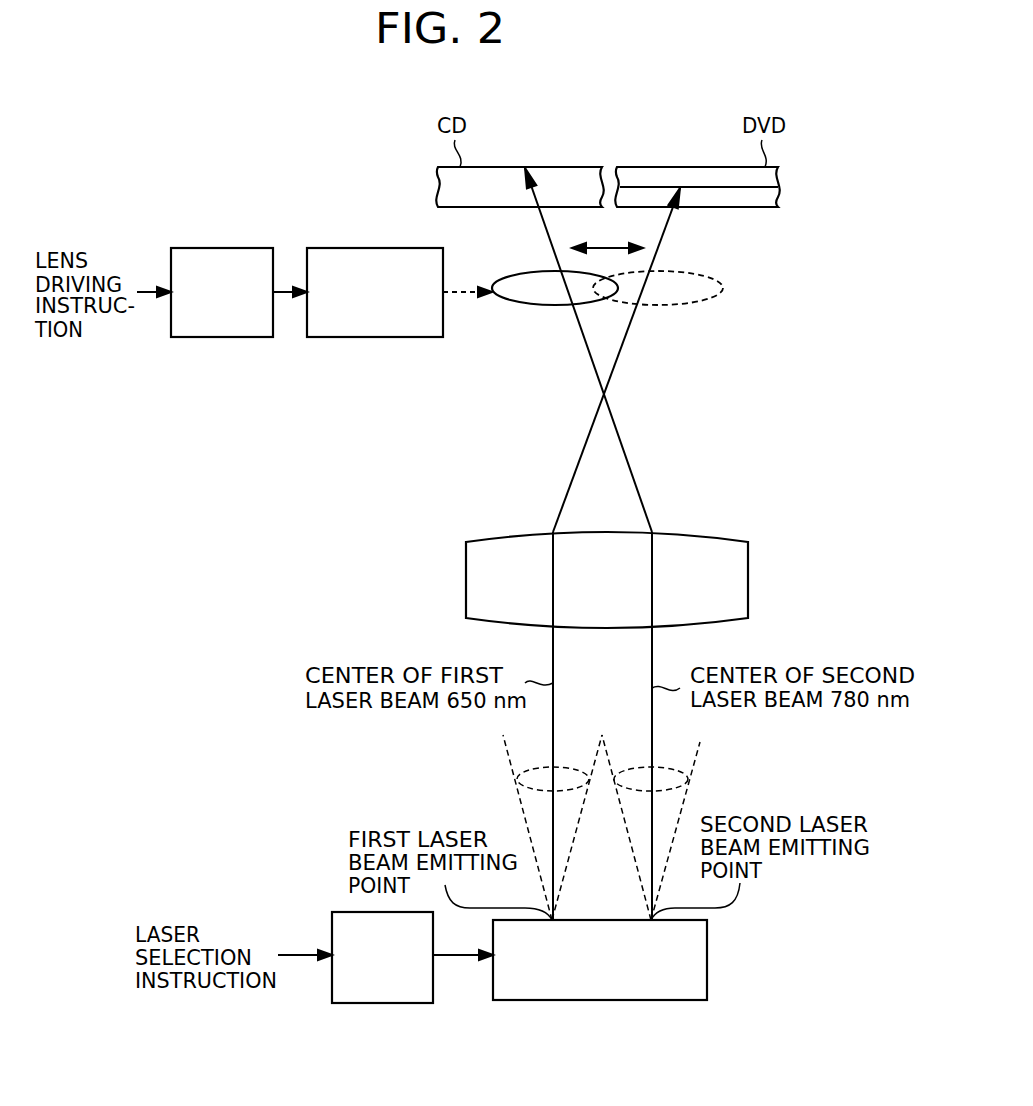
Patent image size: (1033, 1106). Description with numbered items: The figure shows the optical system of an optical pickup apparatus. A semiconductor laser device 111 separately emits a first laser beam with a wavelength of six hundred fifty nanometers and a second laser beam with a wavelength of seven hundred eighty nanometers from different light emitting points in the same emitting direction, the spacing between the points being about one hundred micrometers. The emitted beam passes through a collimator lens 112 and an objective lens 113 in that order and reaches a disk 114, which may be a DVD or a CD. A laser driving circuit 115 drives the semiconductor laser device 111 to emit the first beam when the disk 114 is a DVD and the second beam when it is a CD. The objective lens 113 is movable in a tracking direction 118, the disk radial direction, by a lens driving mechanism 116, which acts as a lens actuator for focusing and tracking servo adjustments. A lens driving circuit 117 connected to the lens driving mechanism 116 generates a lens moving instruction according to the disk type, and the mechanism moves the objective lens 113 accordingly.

The semiconductor laser device 111 is at (708, 958).
The collimator lens 112 is at (500, 533).
The objective lens 113 is at (538, 306).
The disk 114 is at (650, 165).
The laser driving circuit 115 is at (390, 1003).
The lens driving mechanism 116 is at (343, 248).
The lens driving circuit 117 is at (207, 248).
The tracking direction 118 is at (610, 248).